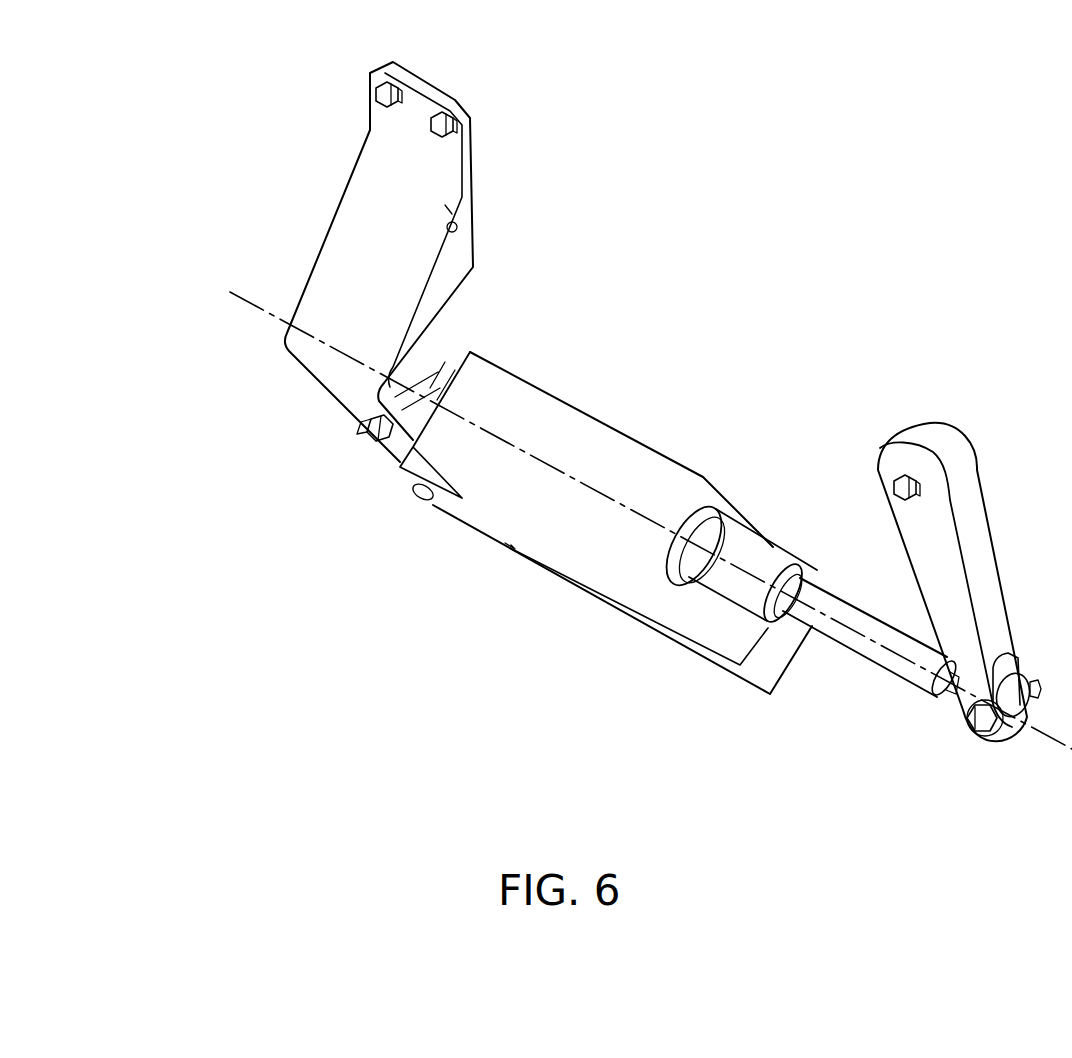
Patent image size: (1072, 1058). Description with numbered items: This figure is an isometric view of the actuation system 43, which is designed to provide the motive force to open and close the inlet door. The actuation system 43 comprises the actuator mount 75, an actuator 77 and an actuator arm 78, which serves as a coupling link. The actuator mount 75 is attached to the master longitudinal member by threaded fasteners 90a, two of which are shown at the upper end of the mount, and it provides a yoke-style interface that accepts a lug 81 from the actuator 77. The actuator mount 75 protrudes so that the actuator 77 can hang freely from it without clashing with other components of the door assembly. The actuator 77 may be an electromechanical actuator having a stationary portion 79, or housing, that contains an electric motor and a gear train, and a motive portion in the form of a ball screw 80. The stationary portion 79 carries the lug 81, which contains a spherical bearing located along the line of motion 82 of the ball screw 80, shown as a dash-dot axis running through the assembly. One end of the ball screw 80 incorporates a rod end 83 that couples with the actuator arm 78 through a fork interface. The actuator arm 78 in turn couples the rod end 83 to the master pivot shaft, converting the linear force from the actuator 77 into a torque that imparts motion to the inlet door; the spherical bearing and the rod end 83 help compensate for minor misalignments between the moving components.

The actuation system 43 is at (368, 665).
The actuator mount 75 is at (470, 176).
The actuator 77 is at (558, 428).
The actuator arm 78 is at (978, 514).
The stationary portion 79 is at (484, 532).
The ball screw 80 is at (875, 658).
The lug 81 is at (424, 378).
The line of motion 82 is at (243, 302).
The rod end 83 is at (1018, 726).
The threaded fasteners 90a is at (377, 92).